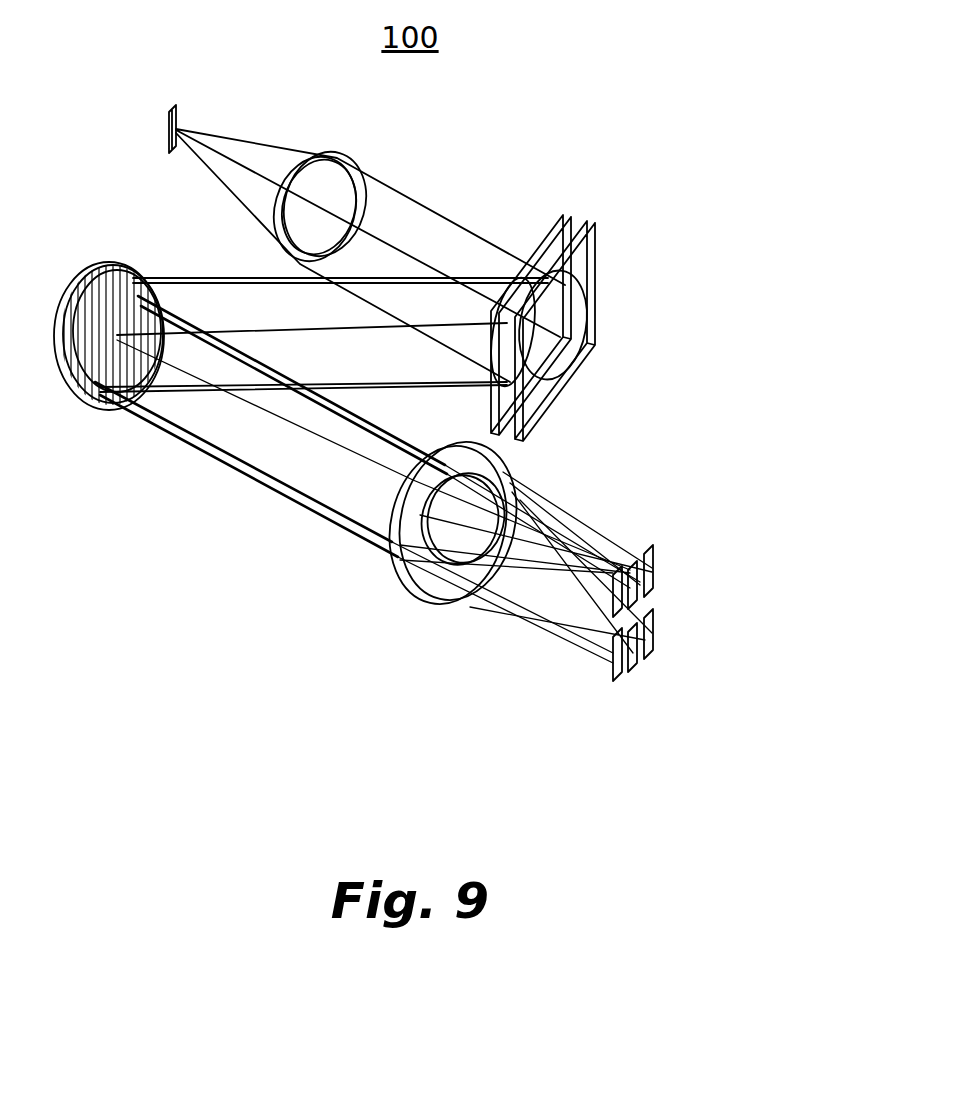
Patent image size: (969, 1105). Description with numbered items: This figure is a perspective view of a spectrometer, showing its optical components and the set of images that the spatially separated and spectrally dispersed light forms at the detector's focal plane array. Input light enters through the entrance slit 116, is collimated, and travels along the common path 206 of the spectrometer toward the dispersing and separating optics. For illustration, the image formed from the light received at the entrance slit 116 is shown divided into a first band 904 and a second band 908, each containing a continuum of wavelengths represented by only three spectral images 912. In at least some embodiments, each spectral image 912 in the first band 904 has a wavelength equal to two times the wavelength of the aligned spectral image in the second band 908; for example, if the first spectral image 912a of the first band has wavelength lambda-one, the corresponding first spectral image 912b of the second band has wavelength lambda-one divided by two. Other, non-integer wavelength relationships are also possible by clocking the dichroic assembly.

The entrance slit 116 is at (172, 129).
The common path 206 is at (527, 184).
The first band 904 is at (643, 711).
The second band 908 is at (729, 528).
The spectral images 912 is at (728, 711).
The first spectral image of the first band 912a is at (652, 662).
The first spectral image of the second band 912b is at (666, 559).